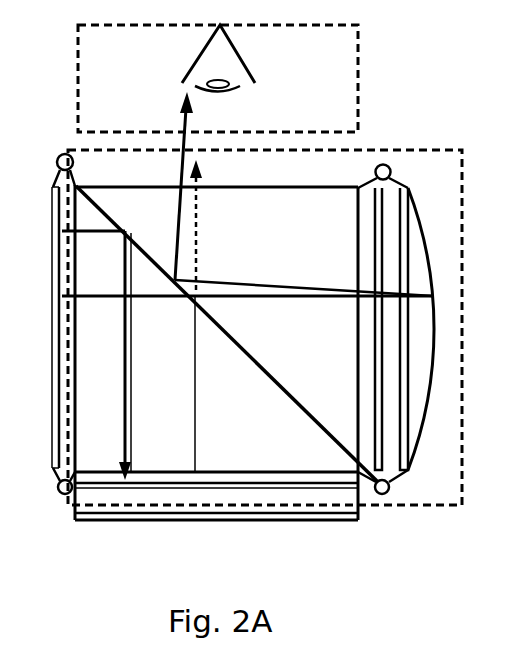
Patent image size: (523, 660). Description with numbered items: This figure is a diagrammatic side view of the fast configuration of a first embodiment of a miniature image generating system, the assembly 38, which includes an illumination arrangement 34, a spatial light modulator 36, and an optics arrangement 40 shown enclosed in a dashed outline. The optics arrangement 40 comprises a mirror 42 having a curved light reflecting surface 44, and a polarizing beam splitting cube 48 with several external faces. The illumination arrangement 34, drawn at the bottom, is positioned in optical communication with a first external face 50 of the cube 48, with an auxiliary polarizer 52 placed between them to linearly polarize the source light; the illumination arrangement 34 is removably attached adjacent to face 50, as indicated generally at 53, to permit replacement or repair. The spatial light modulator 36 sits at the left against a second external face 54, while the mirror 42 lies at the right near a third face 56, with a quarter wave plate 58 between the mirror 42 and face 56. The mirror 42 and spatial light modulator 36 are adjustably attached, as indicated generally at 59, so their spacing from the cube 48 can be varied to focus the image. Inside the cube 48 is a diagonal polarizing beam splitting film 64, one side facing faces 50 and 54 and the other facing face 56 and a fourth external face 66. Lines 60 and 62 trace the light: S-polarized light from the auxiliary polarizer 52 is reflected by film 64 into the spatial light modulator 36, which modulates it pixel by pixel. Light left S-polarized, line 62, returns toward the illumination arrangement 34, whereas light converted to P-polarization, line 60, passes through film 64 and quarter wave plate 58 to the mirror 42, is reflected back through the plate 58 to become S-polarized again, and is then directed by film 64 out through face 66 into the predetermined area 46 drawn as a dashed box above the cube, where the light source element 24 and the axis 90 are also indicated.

The light source / lamp 24 is at (227, 63).
The illumination arrangement 34 is at (172, 520).
The spatial light modulator 36 is at (48, 172).
The assembly 38 is at (385, 100).
The optics arrangement 40 is at (410, 150).
The mirror 42 is at (418, 405).
The curved light reflecting surface 44 is at (433, 268).
The predetermined area 46 is at (335, 62).
The polarizing beam splitting cube 48 is at (152, 208).
The first external face 50 is at (177, 468).
The auxiliary polarizer 52 is at (237, 490).
The removable attachment 53 is at (358, 490).
The second external face 54 is at (82, 322).
The third face 56 is at (355, 352).
The quarter wave plate 58 is at (380, 398).
The adjustable attachment 59 is at (62, 494).
The light line 60 is at (182, 227).
The light line 62 is at (128, 318).
The polarizing beam splitting film 64 is at (263, 373).
The fourth external face 66 is at (278, 188).
The optical axis reference 90 is at (196, 258).